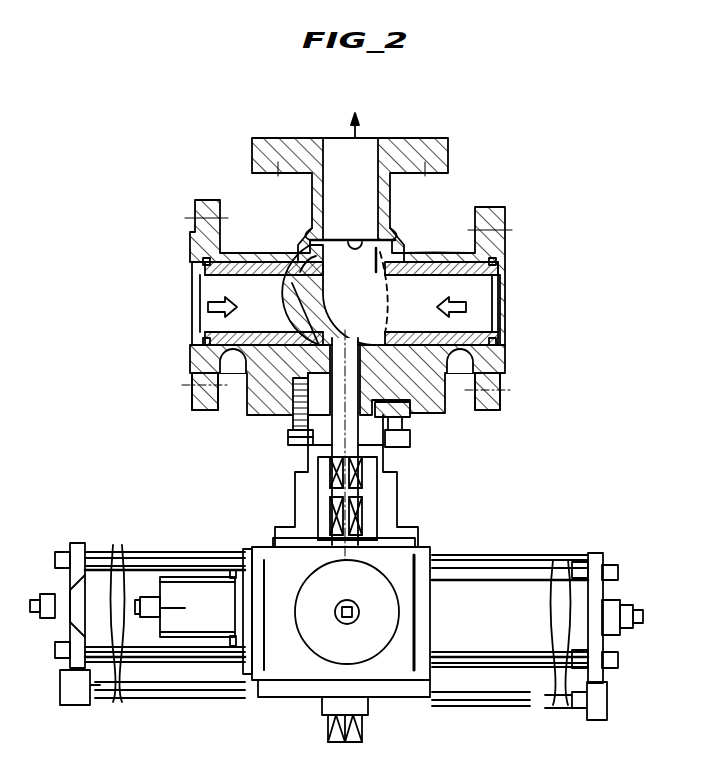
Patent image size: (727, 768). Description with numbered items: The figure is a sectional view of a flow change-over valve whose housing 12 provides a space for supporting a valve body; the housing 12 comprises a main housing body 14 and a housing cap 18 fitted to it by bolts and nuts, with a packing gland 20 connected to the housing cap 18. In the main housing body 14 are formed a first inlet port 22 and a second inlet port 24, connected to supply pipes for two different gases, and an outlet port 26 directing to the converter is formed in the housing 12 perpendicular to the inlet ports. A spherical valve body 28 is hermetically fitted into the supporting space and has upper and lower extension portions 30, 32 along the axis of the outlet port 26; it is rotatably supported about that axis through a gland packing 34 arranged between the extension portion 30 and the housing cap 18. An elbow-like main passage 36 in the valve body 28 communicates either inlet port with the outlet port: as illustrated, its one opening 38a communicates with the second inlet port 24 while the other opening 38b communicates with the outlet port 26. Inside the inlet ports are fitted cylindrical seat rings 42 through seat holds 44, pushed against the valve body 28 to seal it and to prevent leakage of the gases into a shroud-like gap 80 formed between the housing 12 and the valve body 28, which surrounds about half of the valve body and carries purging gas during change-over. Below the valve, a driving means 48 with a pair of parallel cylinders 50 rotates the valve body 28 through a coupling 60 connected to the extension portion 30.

The housing 12 is at (346, 324).
The main housing body 14 is at (198, 250).
The housing cap 18 is at (430, 398).
The packing gland 20 is at (405, 405).
The first inlet port 22 is at (193, 305).
The second inlet port 24 is at (503, 306).
The outlet port 26 is at (340, 150).
The spherical valve body 28 is at (325, 318).
The upper extension portion 30 is at (365, 440).
The lower extension portion 32 is at (305, 240).
The gland packing 34 is at (290, 412).
The elbow-like main passage 36 is at (363, 297).
The opening 38a is at (396, 258).
The opening 38b is at (388, 225).
The cylindrical seat ring 42 is at (258, 262).
The seat hold 44 is at (203, 340).
The driving means 48 is at (628, 523).
The cylinder 50 is at (140, 580).
The coupling 60 is at (365, 518).
The shroud-like gap 80 is at (212, 372).